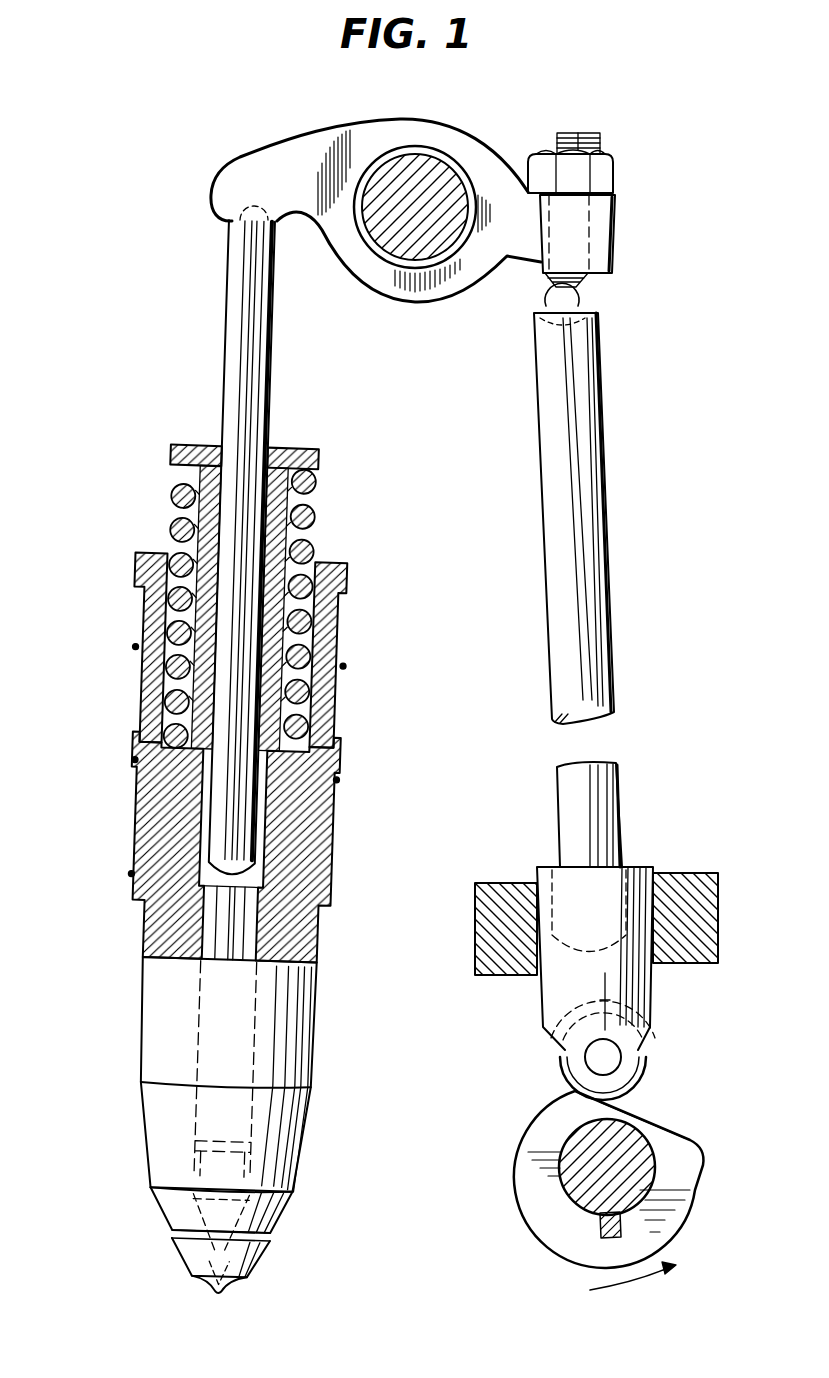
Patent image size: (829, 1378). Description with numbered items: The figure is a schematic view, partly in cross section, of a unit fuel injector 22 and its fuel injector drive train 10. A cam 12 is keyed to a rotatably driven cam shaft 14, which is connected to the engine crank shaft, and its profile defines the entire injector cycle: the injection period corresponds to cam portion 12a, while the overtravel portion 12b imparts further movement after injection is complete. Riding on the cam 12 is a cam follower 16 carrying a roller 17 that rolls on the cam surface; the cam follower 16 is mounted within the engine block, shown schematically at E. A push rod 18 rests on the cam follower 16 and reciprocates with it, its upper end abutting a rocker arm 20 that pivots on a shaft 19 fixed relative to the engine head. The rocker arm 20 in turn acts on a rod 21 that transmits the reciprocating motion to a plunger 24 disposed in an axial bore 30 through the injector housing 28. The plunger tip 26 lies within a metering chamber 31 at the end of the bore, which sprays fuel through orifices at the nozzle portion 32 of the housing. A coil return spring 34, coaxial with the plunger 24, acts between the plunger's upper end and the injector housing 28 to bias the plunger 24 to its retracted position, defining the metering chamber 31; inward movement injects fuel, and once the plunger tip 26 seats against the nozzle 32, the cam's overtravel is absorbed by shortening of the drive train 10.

The fuel injector drive train 10 is at (523, 772).
The cam 12 is at (695, 1160).
The cam portion 12a is at (675, 1125).
The cam portion 12b is at (690, 1228).
The cam shaft 14 is at (690, 1207).
The cam follower 16 is at (648, 1012).
The roller 17 is at (633, 1078).
The push rod 18 is at (617, 805).
The rocker arm shaft 19 is at (433, 162).
The rocker arm 20 is at (323, 128).
The rod 21 is at (272, 362).
The unit fuel injector 22 is at (128, 816).
The plunger 24 is at (312, 940).
The plunger tip 26 is at (253, 1268).
The injector housing 28 is at (330, 855).
The axial bore 30 is at (330, 888).
The metering chamber 31 is at (212, 1282).
The nozzle portion 32 is at (218, 1292).
The return spring 34 is at (313, 516).
The engine block E is at (706, 912).